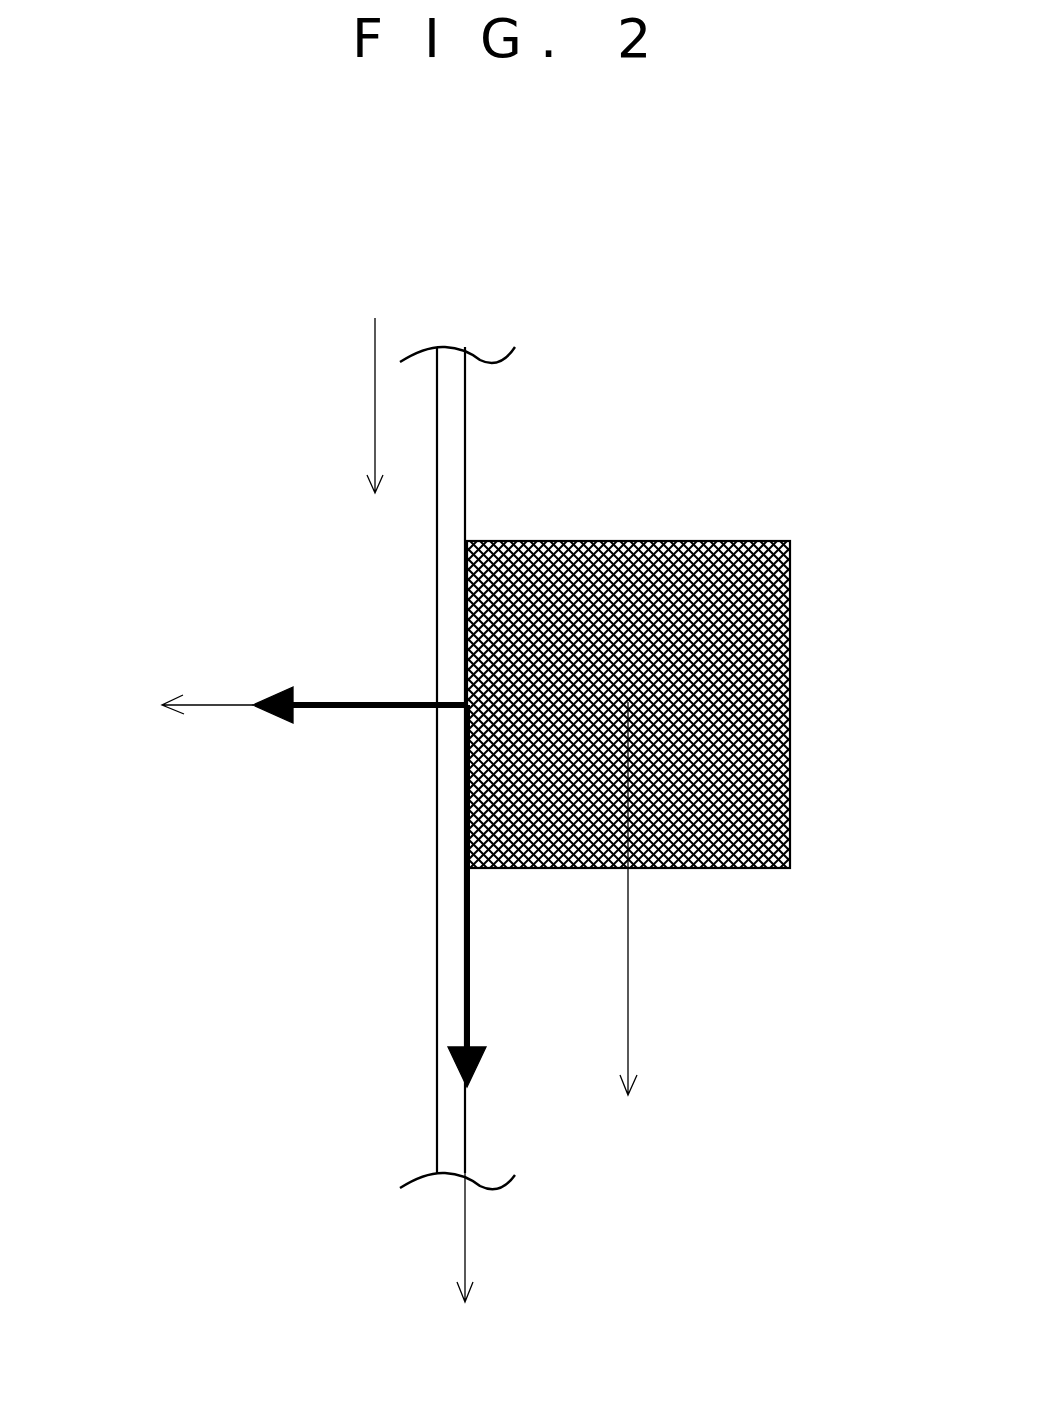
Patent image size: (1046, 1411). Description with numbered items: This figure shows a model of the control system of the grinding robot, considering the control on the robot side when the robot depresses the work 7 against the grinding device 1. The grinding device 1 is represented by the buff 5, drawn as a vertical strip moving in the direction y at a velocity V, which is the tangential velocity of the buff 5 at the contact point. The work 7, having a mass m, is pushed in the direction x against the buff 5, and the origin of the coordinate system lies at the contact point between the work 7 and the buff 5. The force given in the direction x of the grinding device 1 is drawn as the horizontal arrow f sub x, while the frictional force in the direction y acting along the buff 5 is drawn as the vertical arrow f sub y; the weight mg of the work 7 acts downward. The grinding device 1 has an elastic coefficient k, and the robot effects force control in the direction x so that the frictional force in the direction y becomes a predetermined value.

The grinding device 1 is at (658, 296).
The buff 5 is at (466, 458).
The work 7 is at (790, 635).